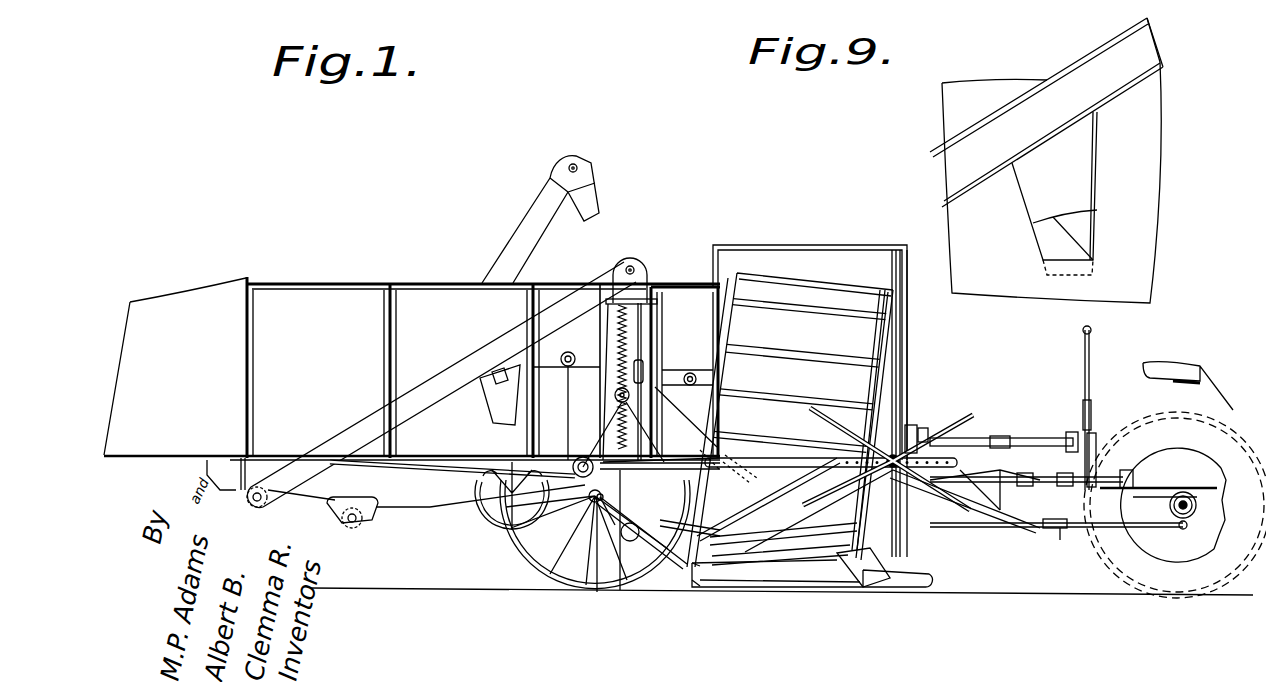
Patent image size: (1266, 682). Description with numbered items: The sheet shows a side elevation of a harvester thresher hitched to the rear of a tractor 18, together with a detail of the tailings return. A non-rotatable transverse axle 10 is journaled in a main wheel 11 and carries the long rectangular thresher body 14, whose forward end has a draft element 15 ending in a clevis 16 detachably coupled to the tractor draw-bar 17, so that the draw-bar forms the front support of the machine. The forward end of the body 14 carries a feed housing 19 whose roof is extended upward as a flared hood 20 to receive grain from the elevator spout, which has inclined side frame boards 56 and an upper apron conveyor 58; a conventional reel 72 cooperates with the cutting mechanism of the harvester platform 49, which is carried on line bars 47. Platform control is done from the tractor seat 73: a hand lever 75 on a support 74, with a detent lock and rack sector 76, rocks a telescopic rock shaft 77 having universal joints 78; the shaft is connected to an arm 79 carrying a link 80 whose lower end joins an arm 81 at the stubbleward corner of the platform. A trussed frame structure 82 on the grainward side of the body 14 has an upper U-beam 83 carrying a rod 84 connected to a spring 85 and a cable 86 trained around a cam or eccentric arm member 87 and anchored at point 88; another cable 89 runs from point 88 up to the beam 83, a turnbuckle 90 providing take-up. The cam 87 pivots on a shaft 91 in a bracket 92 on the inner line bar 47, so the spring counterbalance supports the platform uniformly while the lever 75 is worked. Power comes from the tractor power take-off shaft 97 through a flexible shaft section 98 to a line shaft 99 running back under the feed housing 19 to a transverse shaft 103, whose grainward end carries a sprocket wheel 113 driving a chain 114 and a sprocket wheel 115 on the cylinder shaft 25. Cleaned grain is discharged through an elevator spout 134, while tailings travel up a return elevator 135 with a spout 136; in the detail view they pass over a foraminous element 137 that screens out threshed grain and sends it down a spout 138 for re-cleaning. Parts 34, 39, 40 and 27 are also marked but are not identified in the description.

In FIG. 1, the body 14 is at (414, 300).
In FIG. 1, the elevator spout 134 is at (527, 243).
In FIG. 1, the rod 84 is at (621, 295).
In FIG. 1, the upper U-beam 83 is at (640, 290).
In FIG. 1, the spout 136 is at (665, 295).
In FIG. 1, the rod 34 is at (545, 305).
In FIG. 1, the return elevator 135 is at (427, 377).
In FIG. 1, the spout 138 is at (493, 410).
In FIG. 9, the spout 138 is at (1097, 190).
In FIG. 1, the spring 85 is at (612, 352).
In FIG. 1, the feed housing 19 is at (685, 372).
In FIG. 1, the turnbuckle 90 is at (642, 370).
In FIG. 1, the pulley 27 is at (692, 373).
In FIG. 1, the sprocket wheel 115 is at (618, 382).
In FIG. 1, the cylinder shaft 25 is at (612, 397).
In FIG. 1, the flexible cable 86 is at (600, 440).
In FIG. 1, the frame structure 82 is at (665, 390).
In FIG. 1, the sprocket chain 114 is at (661, 448).
In FIG. 1, the upper elevator conveyor 58 is at (815, 300).
In FIG. 1, the flared hood 20 is at (862, 248).
In FIG. 1, the side frame boards 56 is at (745, 312).
In FIG. 1, the reel 72 is at (810, 410).
In FIG. 1, the sprocket wheel 113 is at (753, 457).
In FIG. 1, the transverse shaft 103 is at (731, 476).
In FIG. 1, the arm 79 is at (912, 430).
In FIG. 1, the universal joints 78 is at (945, 425).
In FIG. 1, the rock shaft 77 is at (1012, 438).
In FIG. 1, the hand lever 75 is at (1089, 365).
In FIG. 1, the detent lock and rack sector 76 is at (1093, 415).
In FIG. 1, the support 74 is at (1098, 440).
In FIG. 1, the seat 73 is at (1168, 375).
In FIG. 1, the power take-off shaft 97 is at (1147, 470).
In FIG. 1, the flexible shaft section 98 is at (1050, 487).
In FIG. 1, the link 80 is at (912, 540).
In FIG. 1, the draft element 15 is at (988, 500).
In FIG. 1, the clevis 16 is at (1060, 532).
In FIG. 1, the line shaft 99 is at (990, 492).
In FIG. 1, the draw-bar 17 is at (1110, 555).
In FIG. 1, the tractor 18 is at (1193, 553).
In FIG. 1, the arm 81 is at (900, 575).
In FIG. 1, the harvester platform 49 is at (787, 592).
In FIG. 1, the cable 89 is at (630, 500).
In FIG. 1, the line bars 47 is at (665, 520).
In FIG. 1, the anchor point 88 is at (650, 545).
In FIG. 1, the main wheel 11 is at (632, 582).
In FIG. 1, the cam 87 is at (628, 540).
In FIG. 1, the shaft 91 is at (615, 527).
In FIG. 1, the bracket 92 is at (598, 497).
In FIG. 1, the axle 10 is at (590, 520).
In FIG. 1, the sprocket 40 is at (470, 510).
In FIG. 1, the truss rod 39 is at (470, 480).
In FIG. 9, the foraminous element 137 is at (1044, 138).